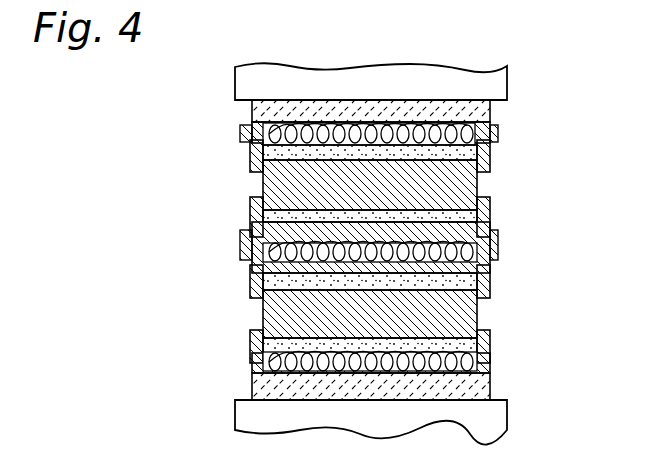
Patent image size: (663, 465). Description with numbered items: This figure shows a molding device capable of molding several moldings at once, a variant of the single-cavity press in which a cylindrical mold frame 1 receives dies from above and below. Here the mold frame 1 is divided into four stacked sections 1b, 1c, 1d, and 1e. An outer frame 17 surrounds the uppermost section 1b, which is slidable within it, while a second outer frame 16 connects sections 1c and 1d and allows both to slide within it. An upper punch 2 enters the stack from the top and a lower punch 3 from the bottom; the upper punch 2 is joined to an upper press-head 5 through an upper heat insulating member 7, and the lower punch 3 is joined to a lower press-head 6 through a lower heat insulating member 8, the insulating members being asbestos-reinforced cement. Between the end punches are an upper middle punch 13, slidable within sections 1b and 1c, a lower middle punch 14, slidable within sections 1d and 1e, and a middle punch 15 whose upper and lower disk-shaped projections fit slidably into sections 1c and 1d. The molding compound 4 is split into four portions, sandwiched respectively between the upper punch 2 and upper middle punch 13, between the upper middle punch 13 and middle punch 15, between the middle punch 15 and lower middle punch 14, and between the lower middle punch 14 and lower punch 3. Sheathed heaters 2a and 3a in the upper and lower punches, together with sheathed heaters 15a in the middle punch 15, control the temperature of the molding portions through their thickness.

The mold frame 1 is at (232, 208).
The mold frame section 1b is at (490, 155).
The mold frame section 1c is at (490, 212).
The mold frame section 1d is at (490, 280).
The mold frame section 1e is at (490, 348).
The upper punch 2 is at (408, 124).
The sheathed heater 2a is at (362, 87).
The lower punch 3 is at (252, 388).
The sheathed heater 3a is at (369, 375).
The molding compound 4 is at (478, 180).
The upper press-head 5 is at (318, 80).
The lower press-head 6 is at (493, 422).
The upper heat insulating member 7 is at (451, 108).
The lower heat insulating member 8 is at (490, 384).
The upper middle punch 13 is at (374, 248).
The lower middle punch 14 is at (265, 312).
The middle punch 15 is at (363, 258).
The sheathed heater 15a is at (252, 245).
The outer frame 16 is at (498, 248).
The outer frame 17 is at (495, 128).